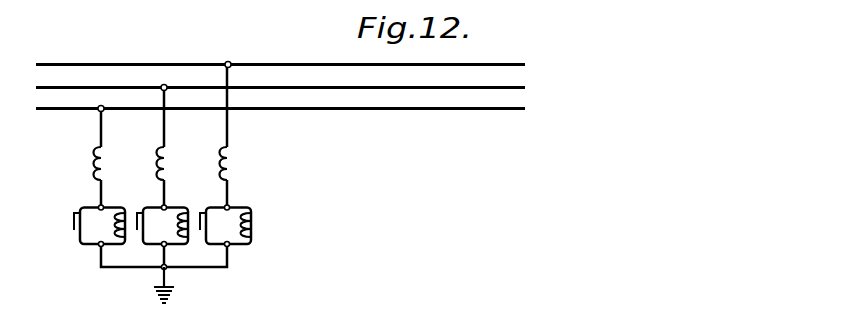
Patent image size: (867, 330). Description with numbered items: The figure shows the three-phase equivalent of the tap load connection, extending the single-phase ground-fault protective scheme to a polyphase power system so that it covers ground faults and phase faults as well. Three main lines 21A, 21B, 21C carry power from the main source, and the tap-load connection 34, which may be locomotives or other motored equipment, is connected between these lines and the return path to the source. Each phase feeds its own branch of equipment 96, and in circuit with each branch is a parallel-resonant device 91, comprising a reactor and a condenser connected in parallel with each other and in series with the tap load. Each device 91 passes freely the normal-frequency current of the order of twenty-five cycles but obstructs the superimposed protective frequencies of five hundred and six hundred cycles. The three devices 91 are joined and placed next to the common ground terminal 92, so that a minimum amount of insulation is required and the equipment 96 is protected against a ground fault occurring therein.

The line 21A is at (280, 56).
The line 21B is at (276, 74).
The line 21C is at (281, 96).
The tap-load connection 34 is at (65, 190).
The equipment 96 is at (104, 161).
The parallel-resonant device 91 is at (107, 230).
The ground terminal 92 is at (168, 292).